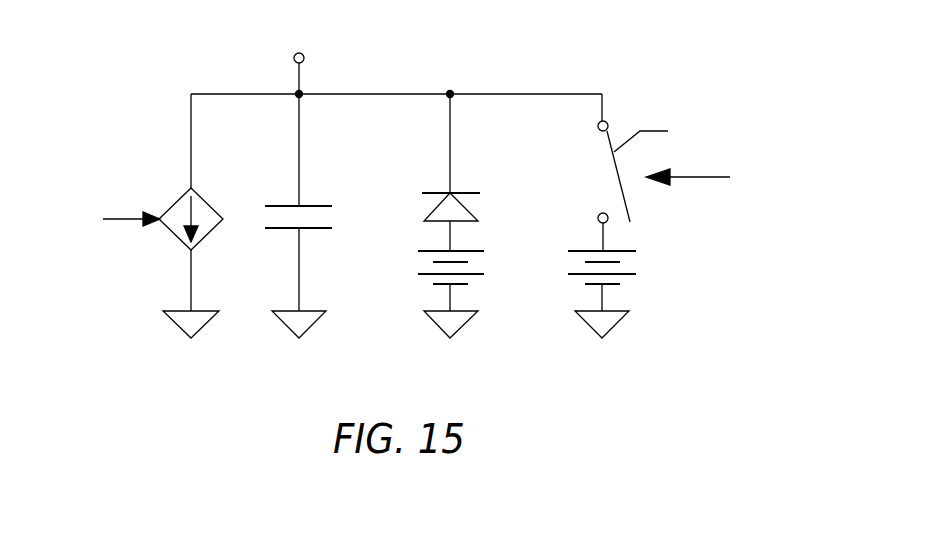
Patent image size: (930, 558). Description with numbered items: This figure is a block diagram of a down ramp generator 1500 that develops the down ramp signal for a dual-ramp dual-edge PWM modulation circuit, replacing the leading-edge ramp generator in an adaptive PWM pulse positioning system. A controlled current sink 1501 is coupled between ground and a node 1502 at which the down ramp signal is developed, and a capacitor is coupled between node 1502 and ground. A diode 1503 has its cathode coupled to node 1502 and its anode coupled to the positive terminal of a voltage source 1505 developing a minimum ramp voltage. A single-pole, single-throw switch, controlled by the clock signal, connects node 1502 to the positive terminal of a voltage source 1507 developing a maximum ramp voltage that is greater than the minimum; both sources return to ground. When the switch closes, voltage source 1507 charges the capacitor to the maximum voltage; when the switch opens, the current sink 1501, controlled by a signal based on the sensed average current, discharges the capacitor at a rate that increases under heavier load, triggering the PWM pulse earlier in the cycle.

The down ramp generator 1500 is at (100, 76).
The controlled current sink 1501 is at (198, 192).
The node 1502 is at (452, 92).
The diode 1503 is at (472, 190).
The voltage source 1505 is at (428, 274).
The voltage source 1507 is at (660, 284).